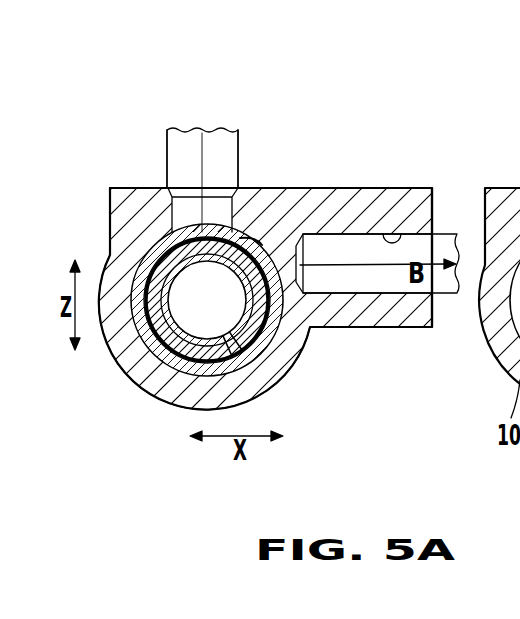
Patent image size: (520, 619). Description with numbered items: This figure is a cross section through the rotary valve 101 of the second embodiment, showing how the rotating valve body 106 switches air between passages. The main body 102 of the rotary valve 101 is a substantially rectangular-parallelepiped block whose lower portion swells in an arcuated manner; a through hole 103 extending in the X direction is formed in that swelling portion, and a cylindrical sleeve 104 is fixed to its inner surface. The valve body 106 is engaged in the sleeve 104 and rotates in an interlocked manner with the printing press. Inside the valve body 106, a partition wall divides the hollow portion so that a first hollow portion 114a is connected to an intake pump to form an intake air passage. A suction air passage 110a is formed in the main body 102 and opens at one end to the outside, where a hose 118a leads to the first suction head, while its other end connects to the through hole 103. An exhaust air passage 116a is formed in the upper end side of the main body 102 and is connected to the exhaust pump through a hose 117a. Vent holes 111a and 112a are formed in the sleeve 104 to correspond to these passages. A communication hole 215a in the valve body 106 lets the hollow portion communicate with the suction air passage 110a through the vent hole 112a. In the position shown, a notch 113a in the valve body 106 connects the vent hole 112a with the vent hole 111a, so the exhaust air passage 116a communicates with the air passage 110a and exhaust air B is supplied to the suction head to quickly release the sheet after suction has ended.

The shaft support unit 101 is at (345, 108).
The main body 102 is at (421, 188).
The through hole 103 is at (140, 280).
The sleeve 104 is at (137, 318).
The valve body 106 is at (133, 367).
The air passage 110a is at (405, 232).
The vent hole 111a is at (190, 230).
The vent hole 112a is at (262, 218).
The notch 113a is at (258, 305).
The first hollow portion 114a is at (173, 372).
The air passage 116a is at (222, 217).
The hose 117a is at (238, 190).
The hose 118a is at (445, 293).
The communication hole 215a is at (256, 385).